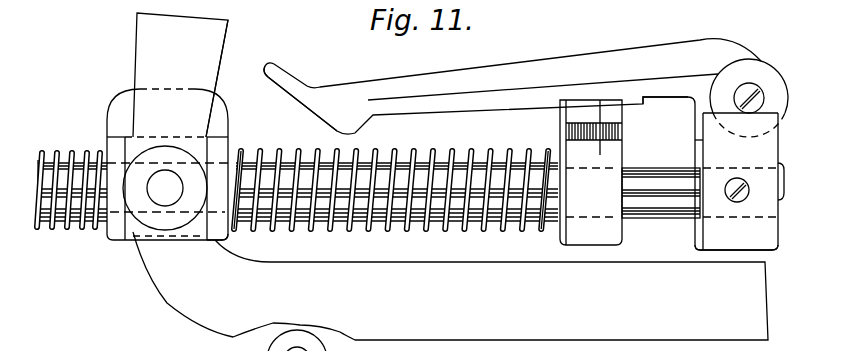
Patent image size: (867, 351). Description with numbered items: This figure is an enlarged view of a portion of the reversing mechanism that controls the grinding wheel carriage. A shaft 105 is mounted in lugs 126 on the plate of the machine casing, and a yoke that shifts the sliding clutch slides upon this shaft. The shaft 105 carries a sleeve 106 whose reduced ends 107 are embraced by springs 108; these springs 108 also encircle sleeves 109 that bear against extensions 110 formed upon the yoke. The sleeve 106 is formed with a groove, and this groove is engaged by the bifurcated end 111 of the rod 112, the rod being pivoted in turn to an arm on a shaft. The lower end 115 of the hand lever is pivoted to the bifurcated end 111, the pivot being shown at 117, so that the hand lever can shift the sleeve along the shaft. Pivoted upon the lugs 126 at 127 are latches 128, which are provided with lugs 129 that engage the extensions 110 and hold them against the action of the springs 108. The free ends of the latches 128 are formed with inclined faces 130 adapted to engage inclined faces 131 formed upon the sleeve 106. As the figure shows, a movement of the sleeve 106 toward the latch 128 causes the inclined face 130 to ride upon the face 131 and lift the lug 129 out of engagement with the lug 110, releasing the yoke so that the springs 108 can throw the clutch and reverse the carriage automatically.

The shaft 105 is at (440, 228).
The sleeve 106 is at (223, 233).
The reduced ends 107 is at (271, 153).
The springs 108 is at (72, 228).
The sleeves 109 is at (497, 155).
The extensions 110 is at (591, 172).
The bifurcated end 111 is at (140, 236).
The rod 112 is at (450, 291).
The lower end 115 is at (150, 54).
The pivot 117 is at (167, 202).
The lugs 126 is at (743, 238).
The pivot 127 is at (745, 110).
The latches 128 is at (558, 50).
The lugs 129 is at (643, 97).
The inclined faces 130 is at (303, 105).
The inclined faces 131 is at (217, 100).